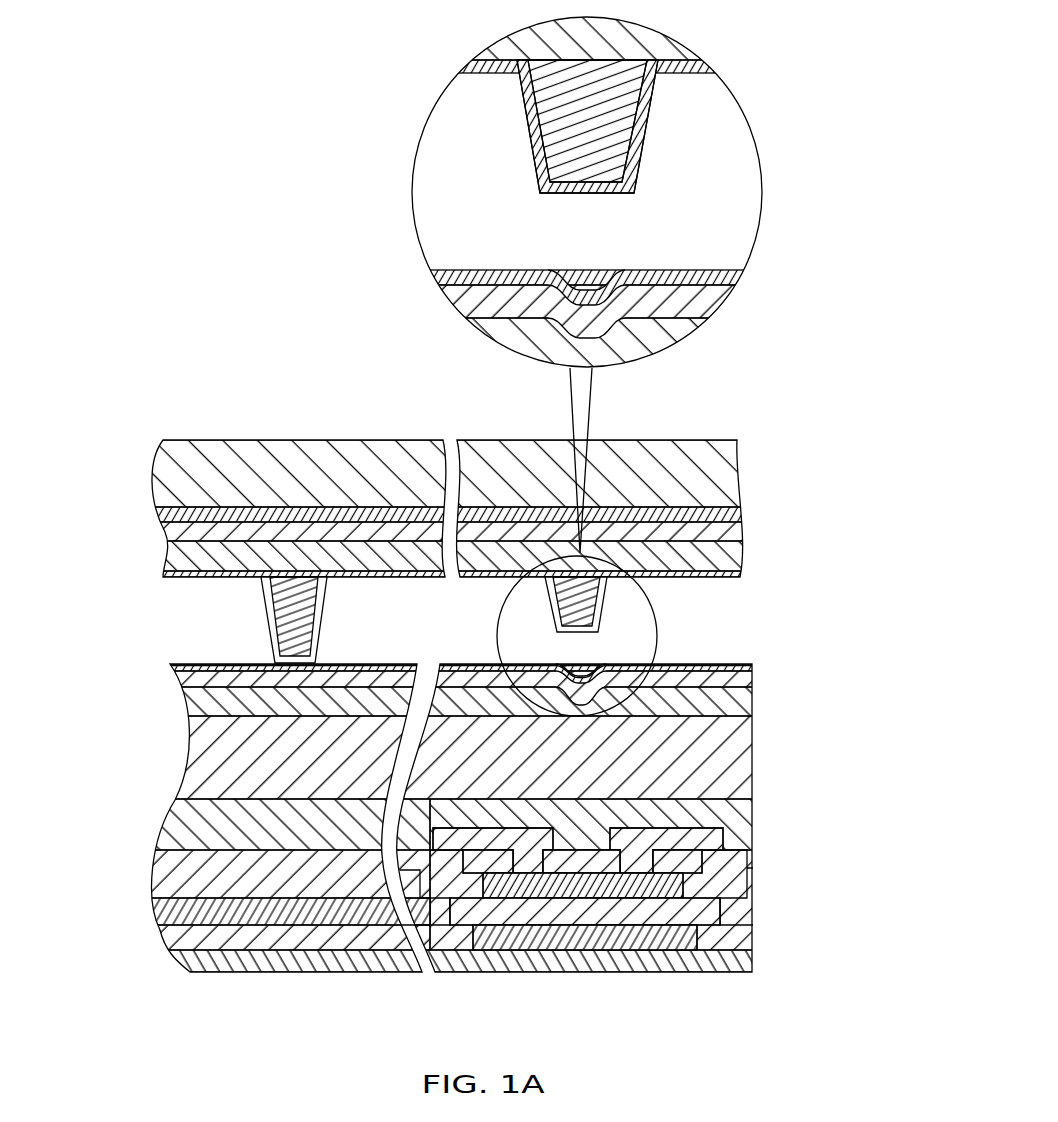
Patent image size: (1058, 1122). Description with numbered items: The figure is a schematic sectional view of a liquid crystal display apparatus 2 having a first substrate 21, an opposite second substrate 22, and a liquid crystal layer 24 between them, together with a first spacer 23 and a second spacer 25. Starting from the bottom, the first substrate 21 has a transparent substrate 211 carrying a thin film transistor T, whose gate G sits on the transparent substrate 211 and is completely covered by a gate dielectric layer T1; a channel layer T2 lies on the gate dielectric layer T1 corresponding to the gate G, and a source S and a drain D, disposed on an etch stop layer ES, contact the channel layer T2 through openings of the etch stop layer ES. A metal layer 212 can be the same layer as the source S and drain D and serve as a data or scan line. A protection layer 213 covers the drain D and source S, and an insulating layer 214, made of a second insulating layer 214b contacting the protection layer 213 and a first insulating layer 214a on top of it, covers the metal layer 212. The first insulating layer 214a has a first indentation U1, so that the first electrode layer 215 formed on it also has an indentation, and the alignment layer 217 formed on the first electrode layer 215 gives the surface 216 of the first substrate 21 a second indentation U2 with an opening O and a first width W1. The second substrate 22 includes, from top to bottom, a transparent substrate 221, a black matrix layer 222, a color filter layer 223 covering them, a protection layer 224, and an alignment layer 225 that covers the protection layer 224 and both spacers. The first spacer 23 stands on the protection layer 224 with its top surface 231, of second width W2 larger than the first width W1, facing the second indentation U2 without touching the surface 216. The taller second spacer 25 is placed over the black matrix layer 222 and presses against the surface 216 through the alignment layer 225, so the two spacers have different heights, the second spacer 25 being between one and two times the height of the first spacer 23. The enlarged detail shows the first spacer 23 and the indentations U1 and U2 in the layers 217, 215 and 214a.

The liquid crystal display apparatus 2 is at (222, 343).
The first substrate 21 is at (155, 690).
The second substrate 22 is at (145, 462).
The first spacer 23 is at (620, 142).
The top surface 231 is at (627, 170).
The liquid crystal layer 24 is at (180, 604).
The second spacer 25 is at (306, 612).
The transparent substrate 211 is at (752, 962).
The metal layer 212 is at (752, 838).
The protection layer 213 is at (752, 812).
The insulating layer 214 is at (850, 705).
The first insulating layer 214a is at (752, 703).
The second insulating layer 214b is at (745, 760).
The first electrode layer 215 is at (745, 676).
The surface 216 is at (720, 664).
The alignment layer 217 is at (752, 668).
The transparent substrate 221 is at (722, 476).
The black matrix layer 222 is at (738, 512).
The color filter layer 223 is at (742, 532).
The protection layer 224 is at (741, 556).
The alignment layer 225 is at (741, 580).
The thin film transistor T is at (763, 850).
The gate G is at (585, 937).
The gate dielectric layer T1 is at (585, 911).
The channel layer T2 is at (583, 885).
The etch stop layer ES is at (582, 862).
The source S is at (526, 843).
The drain D is at (640, 843).
The first width W1 is at (557, 648).
The second width W2 is at (552, 197).
The first indentation U1 is at (587, 327).
The second indentation U2 is at (570, 282).
The opening O is at (602, 269).